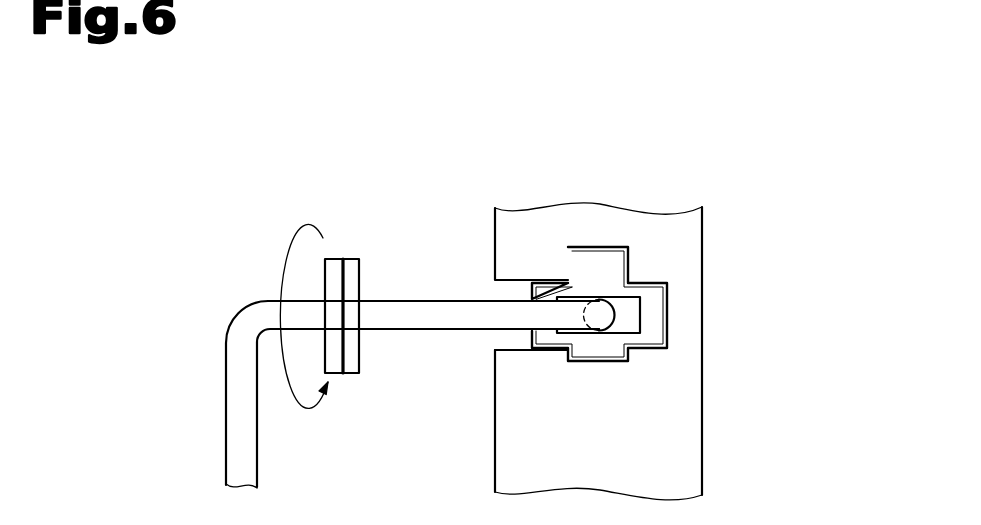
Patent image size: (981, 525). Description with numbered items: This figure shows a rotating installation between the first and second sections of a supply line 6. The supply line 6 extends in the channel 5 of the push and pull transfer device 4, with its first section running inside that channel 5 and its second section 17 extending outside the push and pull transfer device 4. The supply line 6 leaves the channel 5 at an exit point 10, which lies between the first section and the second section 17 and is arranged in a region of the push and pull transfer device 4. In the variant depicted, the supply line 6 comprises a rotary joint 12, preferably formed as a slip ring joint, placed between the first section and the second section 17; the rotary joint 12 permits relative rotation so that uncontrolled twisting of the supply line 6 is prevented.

The push and pull transfer device 4 is at (668, 322).
The channel 5 is at (626, 309).
The supply line 6 is at (598, 312).
The exit point 10 is at (606, 327).
The rotary joint 12 is at (345, 222).
The second section 17 is at (212, 448).